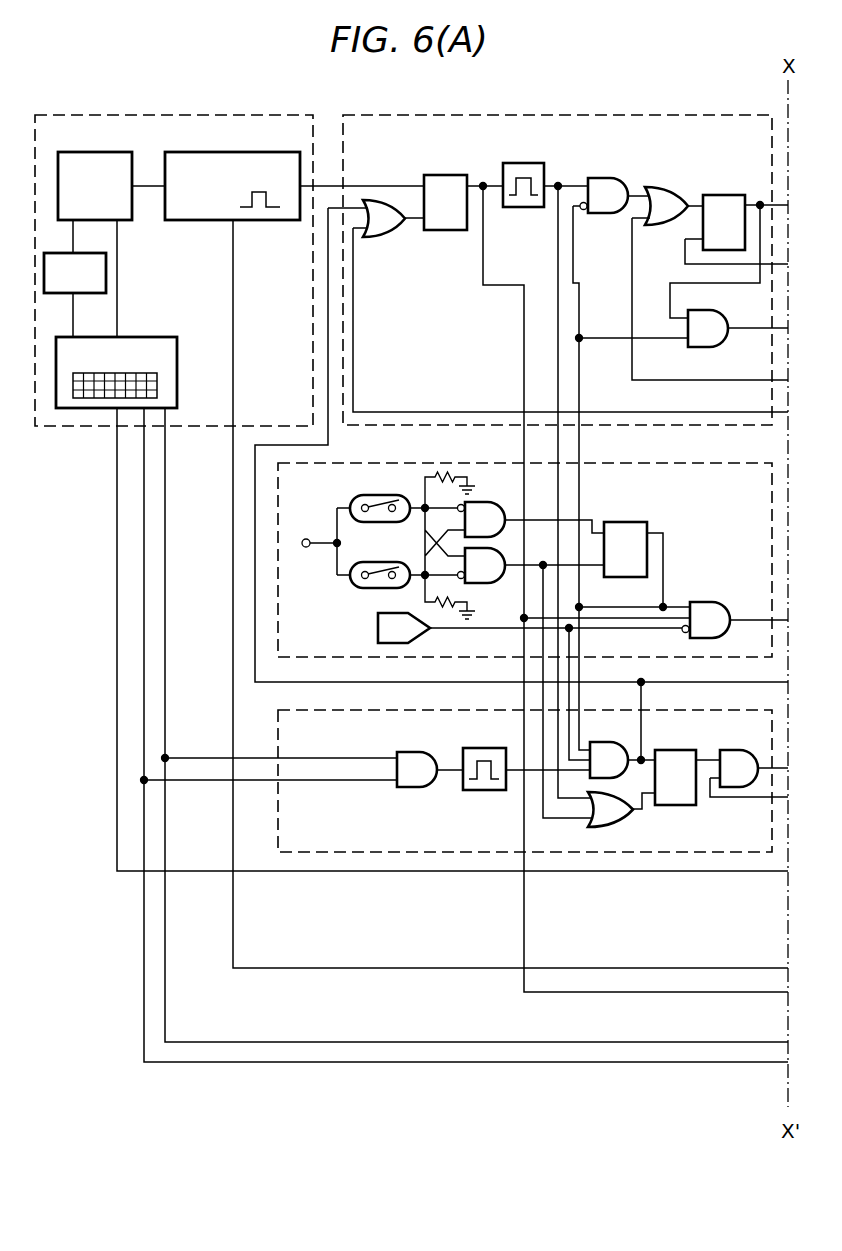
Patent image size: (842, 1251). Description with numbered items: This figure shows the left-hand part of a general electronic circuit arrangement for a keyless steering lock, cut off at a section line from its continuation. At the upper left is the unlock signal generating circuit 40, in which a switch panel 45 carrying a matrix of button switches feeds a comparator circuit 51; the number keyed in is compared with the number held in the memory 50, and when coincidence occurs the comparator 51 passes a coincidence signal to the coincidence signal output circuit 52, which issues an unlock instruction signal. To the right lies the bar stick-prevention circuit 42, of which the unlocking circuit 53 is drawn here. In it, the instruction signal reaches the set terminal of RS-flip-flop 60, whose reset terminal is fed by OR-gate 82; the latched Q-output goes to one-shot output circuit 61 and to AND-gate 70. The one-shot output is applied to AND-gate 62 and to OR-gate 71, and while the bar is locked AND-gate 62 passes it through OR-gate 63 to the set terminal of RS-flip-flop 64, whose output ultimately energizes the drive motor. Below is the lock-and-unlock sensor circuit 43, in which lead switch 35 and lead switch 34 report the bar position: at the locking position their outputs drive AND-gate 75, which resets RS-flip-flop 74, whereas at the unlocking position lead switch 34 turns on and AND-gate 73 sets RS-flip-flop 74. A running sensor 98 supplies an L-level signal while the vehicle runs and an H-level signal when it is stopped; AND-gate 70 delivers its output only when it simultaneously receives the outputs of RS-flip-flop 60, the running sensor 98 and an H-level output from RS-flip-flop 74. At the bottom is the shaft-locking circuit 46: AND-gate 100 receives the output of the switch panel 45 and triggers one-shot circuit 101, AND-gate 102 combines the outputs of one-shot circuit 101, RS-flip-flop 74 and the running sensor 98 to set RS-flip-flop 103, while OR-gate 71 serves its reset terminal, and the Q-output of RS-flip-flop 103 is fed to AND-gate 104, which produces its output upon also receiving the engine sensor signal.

The unlock signal generating circuit 40 is at (80, 114).
The comparator circuit 51 is at (128, 220).
The coincidence signal output circuit 52 is at (262, 220).
The memory 50 is at (90, 293).
The switch panel 45 is at (163, 337).
The bar stick-prevention circuit 42 is at (636, 102).
The unlocking circuit 53 is at (392, 114).
The OR-gate 82 is at (393, 237).
The RS-flip-flop 60 is at (452, 230).
The one-shot output circuit 61 is at (527, 207).
The AND-gate 62 is at (605, 178).
The OR-gate 63 is at (665, 187).
The RS-flip-flop 64 is at (727, 195).
The lock-and-unlock sensor circuit 43 is at (715, 463).
The lead switch 35 is at (358, 495).
The lead switch 34 is at (358, 588).
The AND-gate 73 is at (490, 502).
The AND-gate 75 is at (490, 583).
The RS-flip-flop 74 is at (632, 577).
The running sensor 98 is at (378, 628).
The AND-gate 70 is at (710, 602).
The shaft-locking circuit 46 is at (278, 730).
The AND-gate 100 is at (410, 752).
The one-shot circuit 101 is at (485, 748).
The AND-gate 102 is at (608, 742).
The RS-flip-flop 103 is at (672, 750).
The AND-gate 104 is at (737, 750).
The OR-gate 71 is at (620, 827).